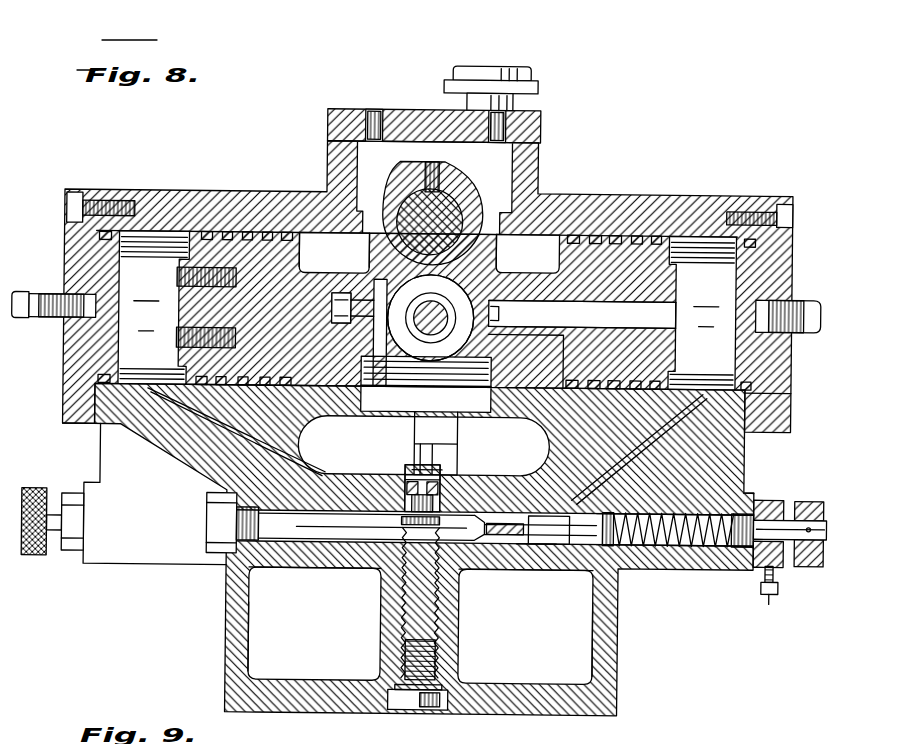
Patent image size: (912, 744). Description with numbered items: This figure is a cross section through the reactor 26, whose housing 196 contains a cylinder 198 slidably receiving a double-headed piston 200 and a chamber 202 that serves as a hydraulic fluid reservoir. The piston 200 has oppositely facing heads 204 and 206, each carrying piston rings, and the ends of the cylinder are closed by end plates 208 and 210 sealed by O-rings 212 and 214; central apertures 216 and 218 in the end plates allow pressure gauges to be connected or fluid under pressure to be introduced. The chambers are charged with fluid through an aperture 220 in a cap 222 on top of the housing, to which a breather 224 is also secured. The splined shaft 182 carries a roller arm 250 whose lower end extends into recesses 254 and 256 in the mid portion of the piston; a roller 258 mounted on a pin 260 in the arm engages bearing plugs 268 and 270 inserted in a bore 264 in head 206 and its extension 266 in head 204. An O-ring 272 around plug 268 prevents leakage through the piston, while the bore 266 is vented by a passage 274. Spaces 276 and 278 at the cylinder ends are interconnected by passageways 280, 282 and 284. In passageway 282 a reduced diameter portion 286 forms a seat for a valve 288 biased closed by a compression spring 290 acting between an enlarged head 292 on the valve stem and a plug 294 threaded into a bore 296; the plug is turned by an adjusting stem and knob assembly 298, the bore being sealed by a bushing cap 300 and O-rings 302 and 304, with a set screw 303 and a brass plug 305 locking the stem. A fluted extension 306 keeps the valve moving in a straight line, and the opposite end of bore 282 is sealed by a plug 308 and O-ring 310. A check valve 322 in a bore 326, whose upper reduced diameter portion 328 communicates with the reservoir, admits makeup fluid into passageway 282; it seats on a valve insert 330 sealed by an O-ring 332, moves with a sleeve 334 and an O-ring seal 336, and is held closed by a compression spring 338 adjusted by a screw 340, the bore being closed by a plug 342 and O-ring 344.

The reactor 26 is at (671, 174).
The shaft 182 is at (434, 175).
The housing 196 is at (733, 189).
The chamber or cylinder 198 is at (548, 228).
The piston 200 is at (386, 356).
The chamber 202 is at (288, 640).
The head 204 is at (220, 236).
The head 206 is at (660, 358).
The end plate 208 is at (68, 210).
The end plate 210 is at (755, 238).
The O-ring 212 is at (68, 398).
The O-ring 214 is at (758, 382).
The aperture 216 is at (75, 318).
The aperture 218 is at (780, 380).
The aperture 220 is at (373, 108).
The cap 222 is at (327, 126).
The breather 224 is at (528, 74).
The roller arm 250 is at (397, 253).
The recess 254 is at (328, 249).
The recess 256 is at (444, 344).
The roller 258 is at (440, 400).
The pin 260 is at (478, 296).
The bore 264 is at (690, 296).
The bore 266 is at (380, 382).
The bearing plug 268 is at (490, 330).
The bearing plug 270 is at (380, 278).
The O-ring 272 is at (550, 296).
The passage 274 is at (330, 298).
The space 276 is at (150, 240).
The space 278 is at (780, 300).
The passageway 280 is at (180, 443).
The passageway 282 is at (545, 540).
The passageway 284 is at (700, 400).
The reduced diameter portion 286 is at (545, 541).
The valve 288 is at (575, 541).
The compression spring 290 is at (680, 545).
The enlarged head 292 is at (620, 507).
The plug 294 is at (728, 545).
The bore 296 is at (710, 507).
The adjusting stem and knob assembly 298 is at (805, 537).
The bushing cap 300 is at (812, 494).
The O-ring 302 is at (765, 503).
The set screw 303 is at (792, 578).
The O-ring 304 is at (760, 568).
The brass plug 305 is at (805, 595).
The fluted extension 306 is at (495, 541).
The plug 308 is at (240, 553).
The O-ring 310 is at (210, 510).
The check valve 322 is at (366, 518).
The bore 326 is at (410, 636).
The upper reduced diameter portion 328 is at (405, 452).
The valve insert 330 is at (450, 494).
The O-ring 332 is at (450, 441).
The sleeve 334 is at (408, 476).
The O-ring seal 336 is at (455, 486).
The compression spring 338 is at (418, 538).
The screw 340 is at (405, 611).
The plug 342 is at (432, 706).
The O-ring 344 is at (445, 686).